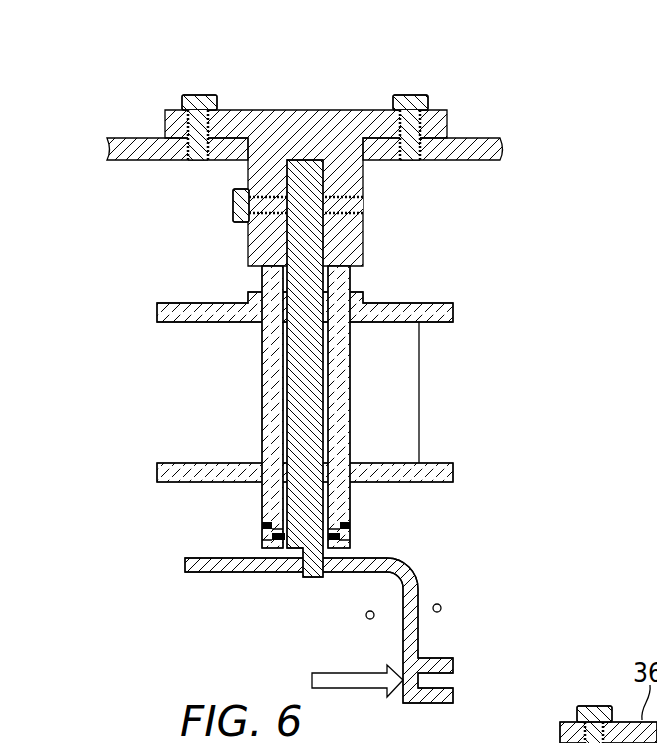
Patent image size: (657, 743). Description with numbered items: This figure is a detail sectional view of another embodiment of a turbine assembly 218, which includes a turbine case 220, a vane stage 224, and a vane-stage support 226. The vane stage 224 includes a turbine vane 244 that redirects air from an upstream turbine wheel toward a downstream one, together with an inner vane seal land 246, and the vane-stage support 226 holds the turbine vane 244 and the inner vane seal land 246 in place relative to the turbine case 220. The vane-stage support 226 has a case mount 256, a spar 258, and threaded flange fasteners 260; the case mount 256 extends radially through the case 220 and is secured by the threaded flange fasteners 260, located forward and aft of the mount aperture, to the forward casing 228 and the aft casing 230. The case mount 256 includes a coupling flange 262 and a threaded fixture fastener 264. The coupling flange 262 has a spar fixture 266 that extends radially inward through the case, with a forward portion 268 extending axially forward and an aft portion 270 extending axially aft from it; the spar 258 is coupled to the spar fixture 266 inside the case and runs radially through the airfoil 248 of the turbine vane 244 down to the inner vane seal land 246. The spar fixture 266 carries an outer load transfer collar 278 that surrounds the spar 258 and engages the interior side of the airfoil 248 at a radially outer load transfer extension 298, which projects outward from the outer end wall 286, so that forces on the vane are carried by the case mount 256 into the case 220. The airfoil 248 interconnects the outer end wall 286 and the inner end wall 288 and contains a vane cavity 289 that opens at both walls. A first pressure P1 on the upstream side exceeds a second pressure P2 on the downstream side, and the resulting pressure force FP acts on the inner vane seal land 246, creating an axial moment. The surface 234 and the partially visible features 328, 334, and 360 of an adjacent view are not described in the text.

The turbine assembly 218 is at (573, 105).
The turbine case 220 is at (111, 129).
The vane stage 224 is at (230, 600).
The vane-stage support 226 is at (492, 217).
The forward casing 228 is at (147, 120).
The aft casing 230 is at (500, 122).
The mounting surface 234 is at (126, 138).
The turbine vane 244 is at (445, 398).
The inner vane seal land 246 is at (440, 561).
The airfoil 248 is at (350, 392).
The case mount 256 is at (398, 198).
The spar 258 is at (282, 280).
The threaded flange fasteners 260 is at (203, 94).
The coupling flange 262 is at (303, 94).
The threaded fixture fastener 264 is at (233, 205).
The spar fixture 266 is at (376, 258).
The forward portion 268 is at (272, 110).
The aft portion 270 is at (350, 110).
The outer load transfer collar 278 is at (356, 272).
The outer end wall 286 is at (455, 306).
The inner end wall 288 is at (455, 477).
The vane cavity 289 is at (286, 424).
The radially outer load transfer extension 298 is at (246, 292).
The first pressure P1 is at (366, 614).
The second pressure P2 is at (442, 608).
The pressure force FP is at (370, 668).
The plate (adjacent figure) 328 is at (533, 728).
The end (adjacent figure) 334 is at (512, 742).
The bolt (adjacent figure) 360 is at (597, 706).